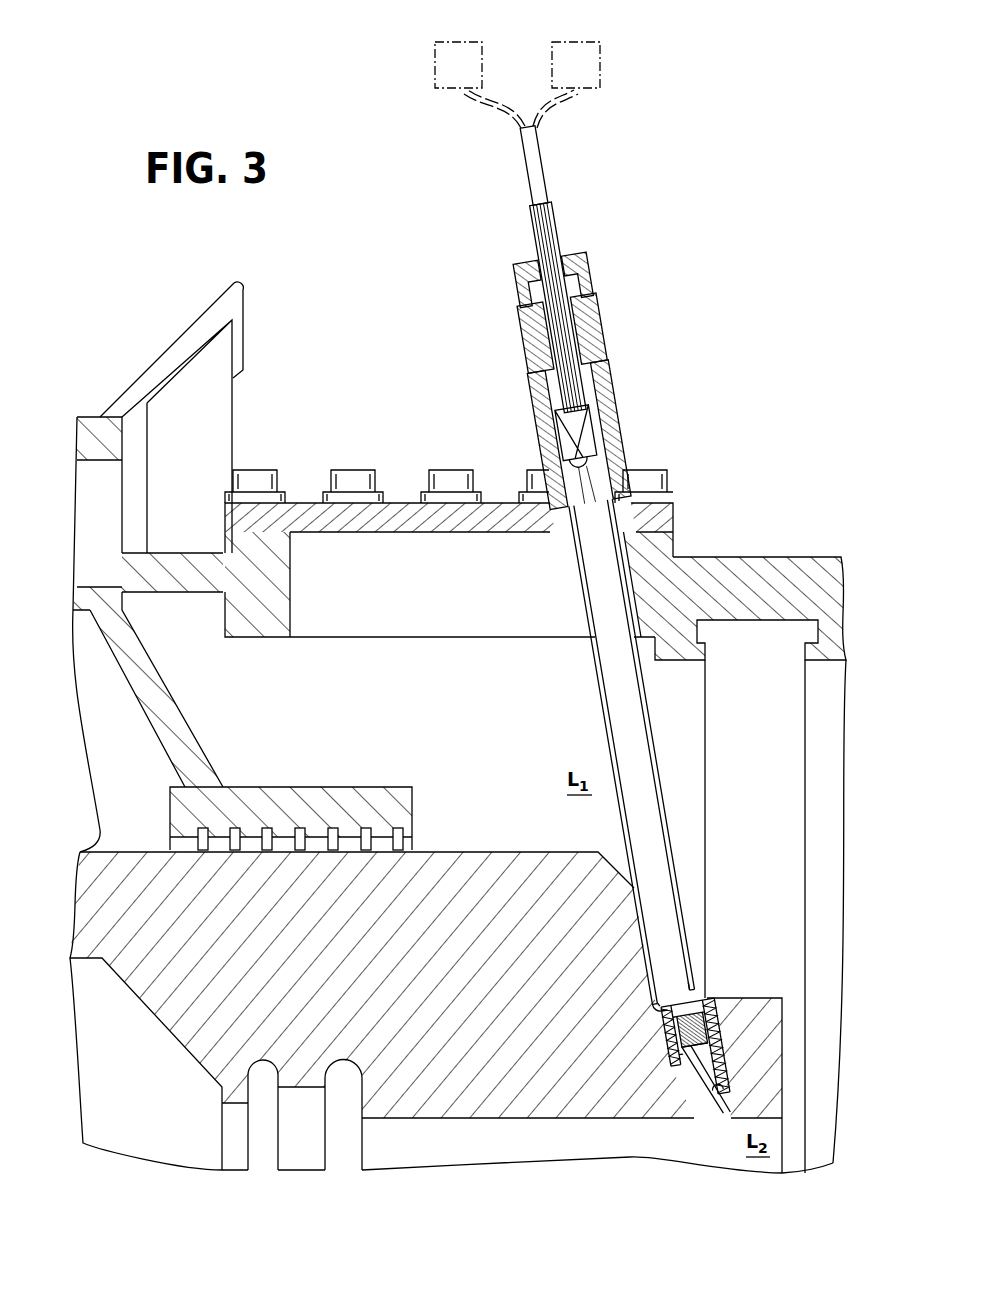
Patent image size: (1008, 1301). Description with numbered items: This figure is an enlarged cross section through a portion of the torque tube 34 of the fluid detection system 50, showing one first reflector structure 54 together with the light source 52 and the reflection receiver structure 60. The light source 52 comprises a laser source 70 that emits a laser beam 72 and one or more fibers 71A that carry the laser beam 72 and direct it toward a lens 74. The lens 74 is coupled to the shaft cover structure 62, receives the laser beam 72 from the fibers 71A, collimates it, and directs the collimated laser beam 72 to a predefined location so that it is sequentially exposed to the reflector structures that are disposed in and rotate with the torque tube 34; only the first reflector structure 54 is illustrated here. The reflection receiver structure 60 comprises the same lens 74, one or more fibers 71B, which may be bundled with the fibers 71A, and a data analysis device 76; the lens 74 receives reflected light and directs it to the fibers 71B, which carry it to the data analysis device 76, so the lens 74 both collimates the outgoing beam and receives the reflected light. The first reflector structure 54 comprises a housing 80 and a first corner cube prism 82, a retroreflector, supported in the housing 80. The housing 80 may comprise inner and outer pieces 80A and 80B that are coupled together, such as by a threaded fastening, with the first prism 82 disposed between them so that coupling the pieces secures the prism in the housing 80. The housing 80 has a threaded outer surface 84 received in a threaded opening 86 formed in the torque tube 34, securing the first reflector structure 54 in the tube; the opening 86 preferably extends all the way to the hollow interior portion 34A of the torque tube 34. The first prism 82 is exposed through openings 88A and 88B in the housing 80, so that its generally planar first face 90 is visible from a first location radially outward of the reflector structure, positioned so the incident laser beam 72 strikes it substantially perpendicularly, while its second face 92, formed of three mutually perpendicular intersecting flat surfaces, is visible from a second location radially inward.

The torque tube 34 is at (82, 905).
The hollow interior portion 34A is at (516, 1147).
The fluid detection system 50 is at (675, 296).
The light source 52 is at (543, 157).
The first reflector structure 54 is at (715, 993).
The reflection receiver structure 60 is at (562, 461).
The shaft cover structure 62 is at (797, 565).
The laser source 70 is at (578, 42).
The fibers 71A is at (570, 300).
The fibers 71B is at (518, 272).
The laser beam 72 is at (572, 442).
The lens 74 is at (591, 428).
The data analysis device 76 is at (456, 42).
The housing 80 is at (666, 1050).
The inner piece 80A is at (730, 1062).
The outer piece 80B is at (641, 1010).
The first corner cube prism 82 is at (700, 1014).
The threaded outer surface 84 is at (720, 1017).
The threaded opening 86 is at (680, 1055).
The opening 88A is at (692, 985).
The opening 88B is at (690, 1053).
The first face 90 is at (697, 1005).
The second face 92 is at (715, 1055).